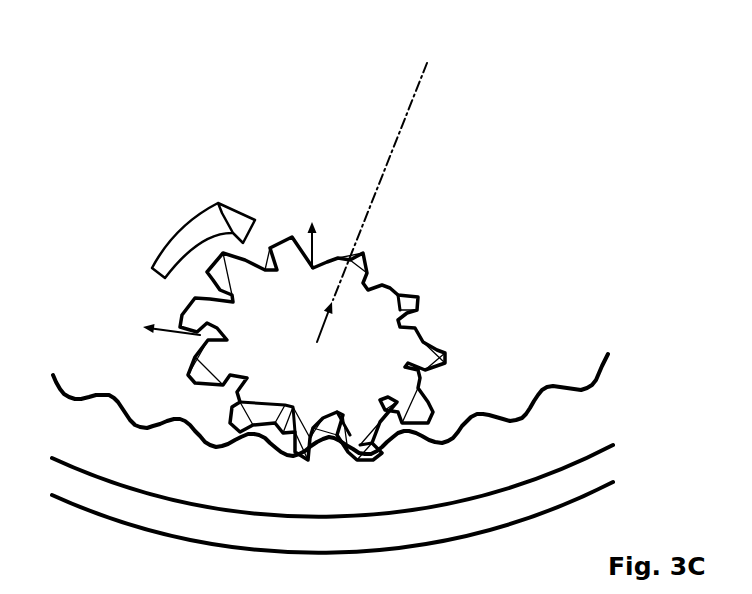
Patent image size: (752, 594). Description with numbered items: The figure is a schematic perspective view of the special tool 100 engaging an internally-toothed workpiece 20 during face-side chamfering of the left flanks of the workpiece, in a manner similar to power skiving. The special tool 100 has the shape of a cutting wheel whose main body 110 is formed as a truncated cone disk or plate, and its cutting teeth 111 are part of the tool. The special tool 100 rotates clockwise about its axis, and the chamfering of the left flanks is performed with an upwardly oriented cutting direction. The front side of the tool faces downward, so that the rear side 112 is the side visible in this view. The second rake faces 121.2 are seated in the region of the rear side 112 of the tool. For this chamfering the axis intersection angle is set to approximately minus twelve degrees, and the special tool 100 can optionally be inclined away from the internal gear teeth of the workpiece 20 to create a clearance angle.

The special tool 100 is at (250, 135).
The main body 110 is at (381, 245).
The cutting tooth 111 is at (303, 423).
The rear side 112 is at (398, 300).
The second rake face 121.2 is at (311, 440).
The internally-toothed workpiece 20 is at (607, 418).